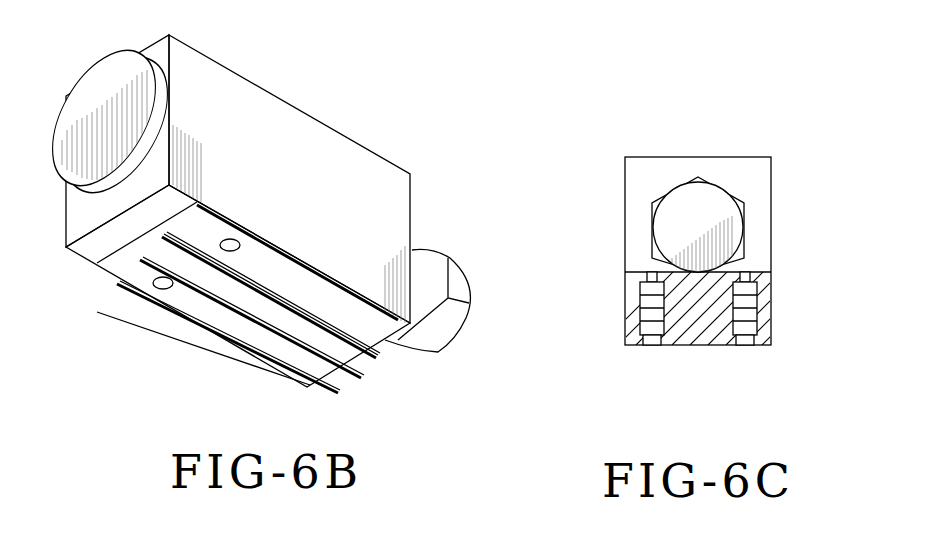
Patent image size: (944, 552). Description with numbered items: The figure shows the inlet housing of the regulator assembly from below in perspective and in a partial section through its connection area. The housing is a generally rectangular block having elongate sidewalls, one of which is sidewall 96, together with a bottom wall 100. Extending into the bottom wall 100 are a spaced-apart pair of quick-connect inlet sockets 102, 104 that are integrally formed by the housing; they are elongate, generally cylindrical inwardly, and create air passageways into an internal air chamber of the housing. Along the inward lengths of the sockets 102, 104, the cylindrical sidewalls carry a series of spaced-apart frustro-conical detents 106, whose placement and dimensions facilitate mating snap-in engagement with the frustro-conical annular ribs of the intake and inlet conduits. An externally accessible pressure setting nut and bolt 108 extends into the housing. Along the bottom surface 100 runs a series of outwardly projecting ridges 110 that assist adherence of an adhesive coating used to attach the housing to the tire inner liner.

In FIG. 6B, the sidewall 96 is at (300, 148).
In FIG. 6B, the bottom wall 100 is at (372, 345).
In FIG. 6B, the quick-connect inlet socket 102 is at (160, 293).
In FIG. 6C, the quick-connect inlet socket 102 is at (747, 350).
In FIG. 6B, the quick-connect inlet socket 104 is at (226, 257).
In FIG. 6C, the quick-connect inlet socket 104 is at (651, 350).
In FIG. 6C, the frustro-conical detents 106 is at (652, 296).
In FIG. 6B, the pressure setting nut and bolt 108 is at (463, 254).
In FIG. 6C, the pressure setting nut and bolt 108 is at (698, 226).
In FIG. 6B, the ridges 110 is at (248, 330).